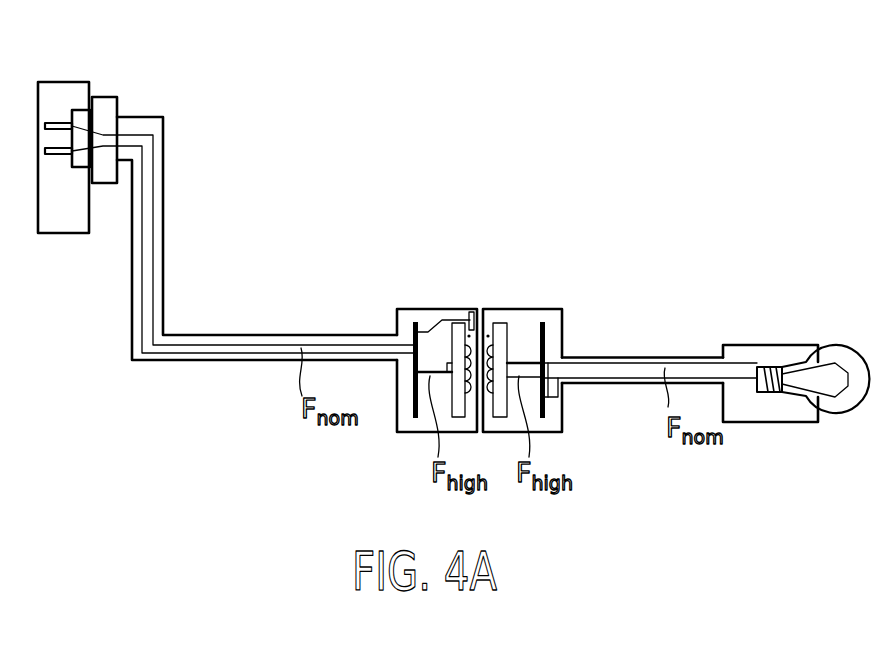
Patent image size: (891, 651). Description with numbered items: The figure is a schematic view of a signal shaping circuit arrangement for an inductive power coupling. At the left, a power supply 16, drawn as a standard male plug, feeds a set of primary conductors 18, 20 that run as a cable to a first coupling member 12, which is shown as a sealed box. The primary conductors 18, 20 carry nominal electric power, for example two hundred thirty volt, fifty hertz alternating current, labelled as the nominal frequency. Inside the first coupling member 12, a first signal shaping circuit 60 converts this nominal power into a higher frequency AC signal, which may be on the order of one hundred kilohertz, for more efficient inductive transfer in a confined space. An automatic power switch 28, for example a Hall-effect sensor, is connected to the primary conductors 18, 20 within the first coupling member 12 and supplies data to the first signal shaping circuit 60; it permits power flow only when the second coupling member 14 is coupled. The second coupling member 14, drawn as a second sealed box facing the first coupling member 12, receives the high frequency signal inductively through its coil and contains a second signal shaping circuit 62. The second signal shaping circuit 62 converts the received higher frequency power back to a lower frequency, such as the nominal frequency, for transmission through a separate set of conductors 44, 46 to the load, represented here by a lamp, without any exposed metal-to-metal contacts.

The power supply 16 is at (72, 88).
The primary conductor 18 is at (227, 355).
The primary conductor 20 is at (322, 334).
The first coupling member 12 is at (417, 308).
The automatic power switch 28 is at (468, 309).
The second coupling member 14 is at (542, 309).
The conductor 44 is at (620, 359).
The conductor 46 is at (615, 381).
The first signal shaping circuit 60 is at (413, 417).
The second signal shaping circuit 62 is at (546, 418).